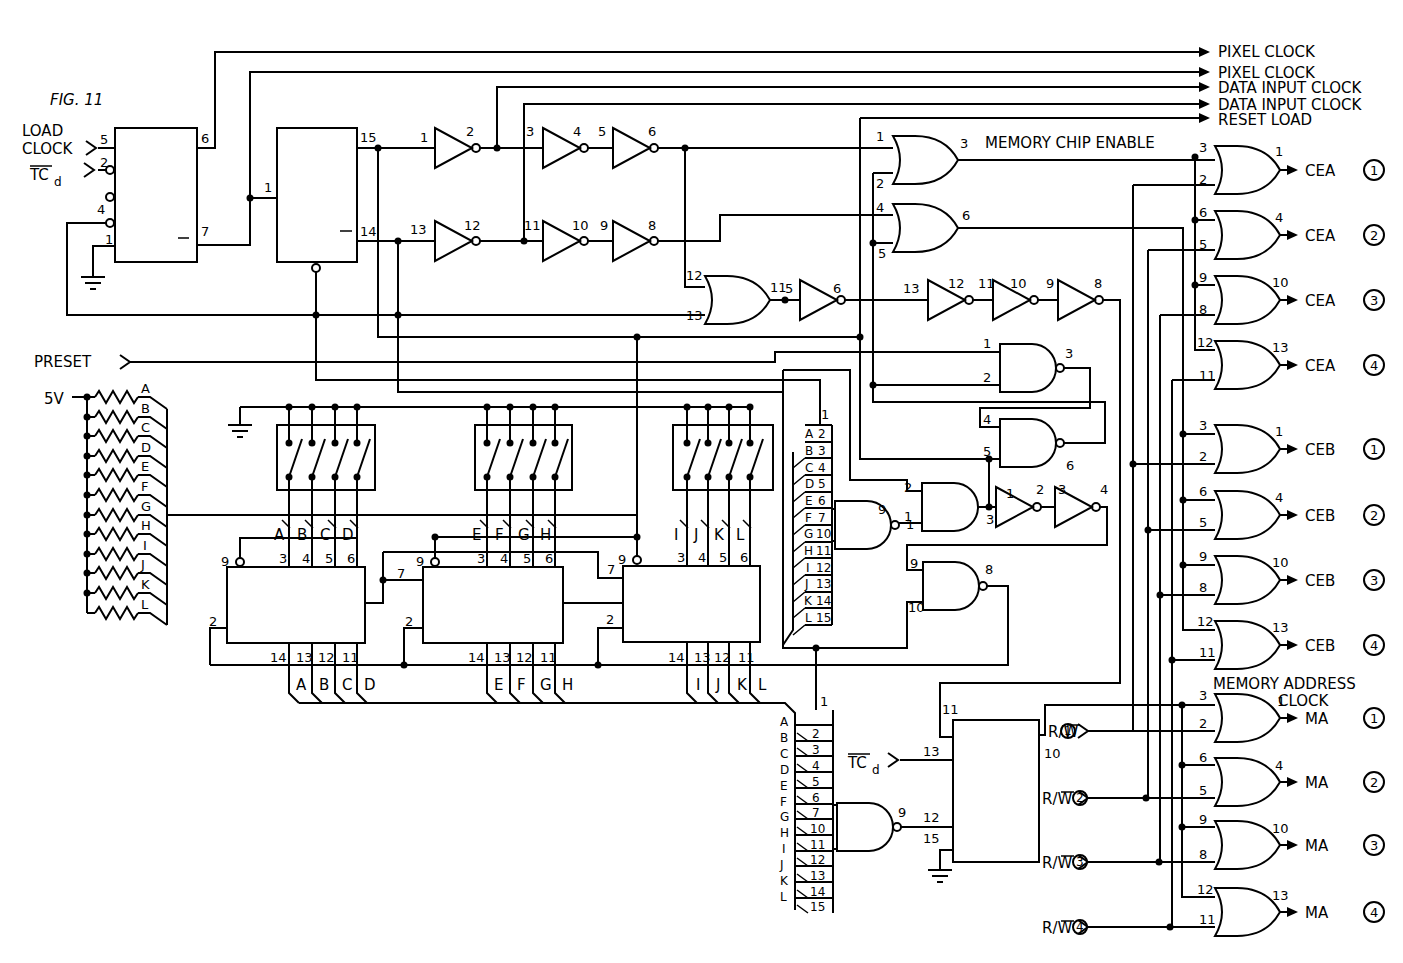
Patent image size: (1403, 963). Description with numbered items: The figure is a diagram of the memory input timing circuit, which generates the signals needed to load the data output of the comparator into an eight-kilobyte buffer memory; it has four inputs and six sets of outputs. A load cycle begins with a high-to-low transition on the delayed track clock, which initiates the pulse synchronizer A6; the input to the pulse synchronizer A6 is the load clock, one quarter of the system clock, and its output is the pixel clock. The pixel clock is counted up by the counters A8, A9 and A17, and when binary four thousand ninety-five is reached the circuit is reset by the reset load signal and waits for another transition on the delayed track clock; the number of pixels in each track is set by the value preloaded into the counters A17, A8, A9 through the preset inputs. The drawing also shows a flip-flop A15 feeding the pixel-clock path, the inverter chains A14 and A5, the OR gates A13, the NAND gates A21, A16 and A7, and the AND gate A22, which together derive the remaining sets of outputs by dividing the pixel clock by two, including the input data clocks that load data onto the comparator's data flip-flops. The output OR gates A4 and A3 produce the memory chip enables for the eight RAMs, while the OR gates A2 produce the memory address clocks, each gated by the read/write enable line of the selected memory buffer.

The pulse synchronizer A6 is at (577, 495).
The flip-flop A15 is at (317, 195).
The inverter delay chain A14 is at (546, 194).
The OR gates A13 is at (835, 218).
The inverters A5 is at (951, 387).
The NAND gates A21 is at (1006, 464).
The AND gate A22 is at (950, 497).
The NAND gate A16 is at (863, 516).
The counter A17 is at (296, 605).
The counter A8 is at (493, 605).
The counter A9 is at (692, 605).
The NAND gate A7 is at (869, 815).
The OR gates A4 (chip enable A) A4 is at (1251, 270).
The OR gates A3 (chip enable B) A3 is at (1251, 549).
The OR gates A2 (memory address clock) A2 is at (1251, 817).